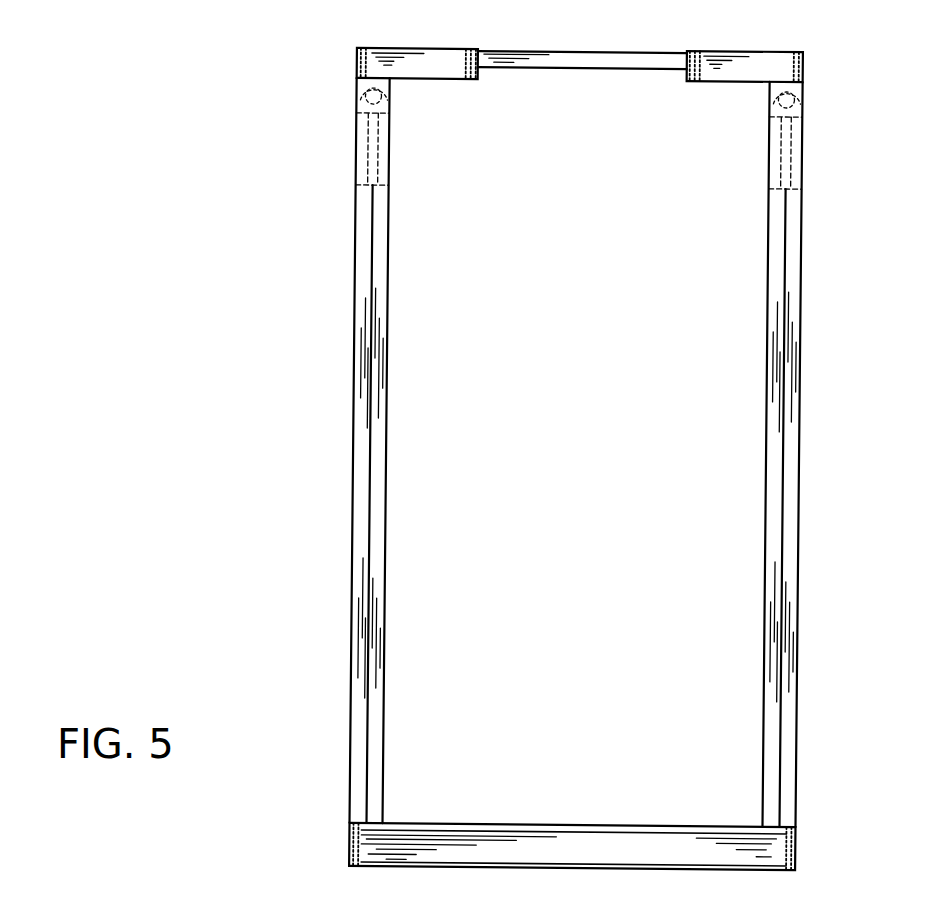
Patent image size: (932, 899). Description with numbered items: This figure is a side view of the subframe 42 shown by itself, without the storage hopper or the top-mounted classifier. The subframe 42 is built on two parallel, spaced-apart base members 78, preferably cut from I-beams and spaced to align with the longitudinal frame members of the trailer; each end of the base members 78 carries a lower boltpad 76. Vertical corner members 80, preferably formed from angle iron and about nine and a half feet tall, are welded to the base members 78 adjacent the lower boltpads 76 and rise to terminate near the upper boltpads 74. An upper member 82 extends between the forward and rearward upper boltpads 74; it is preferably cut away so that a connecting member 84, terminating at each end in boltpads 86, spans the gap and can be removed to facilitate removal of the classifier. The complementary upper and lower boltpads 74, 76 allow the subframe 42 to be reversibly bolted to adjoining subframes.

The subframe 42 is at (793, 407).
The upper boltpads 74 is at (355, 62).
The lower boltpads 76 is at (354, 840).
The base members 78 is at (560, 838).
The vertical corner members 80 is at (363, 586).
The upper member 82 is at (430, 72).
The connecting member 84 is at (612, 60).
The boltpads 86 is at (468, 50).